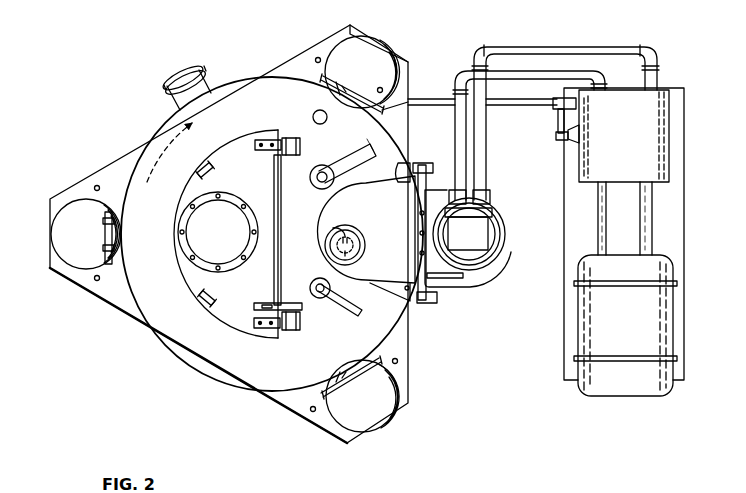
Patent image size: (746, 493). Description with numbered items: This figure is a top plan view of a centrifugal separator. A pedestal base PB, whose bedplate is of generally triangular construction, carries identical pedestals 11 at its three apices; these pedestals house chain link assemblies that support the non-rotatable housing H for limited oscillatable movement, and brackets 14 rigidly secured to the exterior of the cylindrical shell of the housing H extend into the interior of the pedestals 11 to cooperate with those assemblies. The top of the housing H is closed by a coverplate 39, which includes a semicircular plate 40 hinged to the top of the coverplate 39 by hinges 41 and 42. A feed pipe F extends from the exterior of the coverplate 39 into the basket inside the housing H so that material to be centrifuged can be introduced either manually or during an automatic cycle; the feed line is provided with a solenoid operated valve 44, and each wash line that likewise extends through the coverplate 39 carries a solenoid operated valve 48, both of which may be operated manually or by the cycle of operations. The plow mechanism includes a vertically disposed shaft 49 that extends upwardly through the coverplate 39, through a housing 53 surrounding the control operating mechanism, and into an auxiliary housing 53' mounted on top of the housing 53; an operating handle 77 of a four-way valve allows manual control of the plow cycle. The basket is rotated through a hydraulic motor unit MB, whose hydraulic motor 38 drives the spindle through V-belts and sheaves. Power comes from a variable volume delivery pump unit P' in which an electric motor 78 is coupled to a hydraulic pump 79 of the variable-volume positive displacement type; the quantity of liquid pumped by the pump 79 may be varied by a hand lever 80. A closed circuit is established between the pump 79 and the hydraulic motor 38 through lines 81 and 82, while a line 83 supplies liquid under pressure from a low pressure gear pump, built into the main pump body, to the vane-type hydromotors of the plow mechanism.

The pedestals 11 is at (371, 47).
The brackets 14 is at (368, 101).
The hydraulic motor 38 is at (503, 229).
The coverplate 39 is at (227, 360).
The semicircular plate 40 is at (184, 277).
The hinge 41 is at (266, 152).
The hinge 42 is at (297, 327).
The solenoid operated valve 44 is at (323, 189).
The solenoid operated valve 48 is at (318, 297).
The shaft 49 is at (367, 229).
The housing 53 is at (352, 238).
The auxiliary housing 53' is at (348, 218).
The operating handle 77 is at (401, 166).
The electric motor 78 is at (673, 330).
The hydraulic pump 79 is at (660, 141).
The hand lever 80 is at (556, 119).
The line 81 is at (576, 51).
The line 82 is at (516, 72).
The line 83 is at (432, 99).
The pedestal base PB is at (114, 156).
The housing H is at (154, 358).
The feed pipe F is at (331, 151).
The hydraulic motor unit MB is at (497, 273).
The variable volume delivery pump unit P' is at (641, 207).